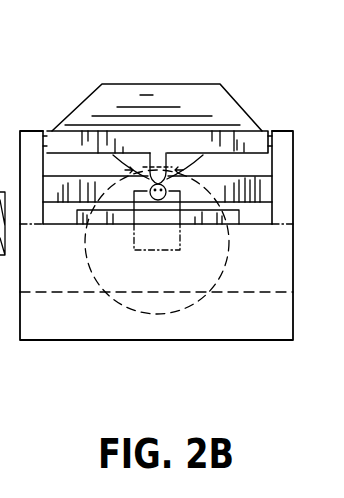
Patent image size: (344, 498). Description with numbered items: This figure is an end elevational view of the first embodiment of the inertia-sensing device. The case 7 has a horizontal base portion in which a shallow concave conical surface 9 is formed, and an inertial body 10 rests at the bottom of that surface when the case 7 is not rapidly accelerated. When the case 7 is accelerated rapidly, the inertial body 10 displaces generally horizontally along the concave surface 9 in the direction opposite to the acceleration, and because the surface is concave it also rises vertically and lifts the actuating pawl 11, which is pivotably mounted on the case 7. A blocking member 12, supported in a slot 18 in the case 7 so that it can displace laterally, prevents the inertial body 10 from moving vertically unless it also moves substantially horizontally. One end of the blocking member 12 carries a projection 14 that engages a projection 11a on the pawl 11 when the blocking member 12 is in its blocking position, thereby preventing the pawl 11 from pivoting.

The case 7 is at (30, 275).
The shallow concave conical surface 9 is at (205, 300).
The inertial body 10 is at (85, 285).
The actuating pawl 11 is at (107, 102).
The projection 11a is at (158, 155).
The blocking member 12 is at (86, 228).
The projection 14 is at (176, 172).
The slot 18 is at (254, 212).